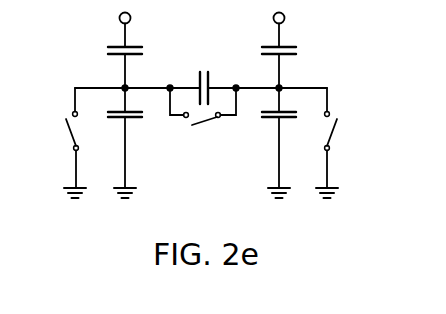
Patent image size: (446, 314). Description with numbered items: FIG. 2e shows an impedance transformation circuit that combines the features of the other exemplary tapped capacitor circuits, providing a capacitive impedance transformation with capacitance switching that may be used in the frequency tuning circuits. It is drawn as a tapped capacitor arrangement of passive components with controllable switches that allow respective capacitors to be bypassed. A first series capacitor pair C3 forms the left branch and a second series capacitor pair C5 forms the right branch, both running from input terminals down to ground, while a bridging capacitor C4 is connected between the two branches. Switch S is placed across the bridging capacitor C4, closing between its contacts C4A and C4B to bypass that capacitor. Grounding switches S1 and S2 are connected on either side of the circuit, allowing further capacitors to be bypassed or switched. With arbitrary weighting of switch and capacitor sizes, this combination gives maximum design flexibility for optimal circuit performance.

The capacitor C3 (series capacitor pair on left branch) C3 is at (104, 106).
The capacitor C4 (bridging capacitor) C4 is at (202, 74).
The capacitor C5 (series capacitor pair on right branch) C5 is at (299, 106).
The switch contact C4A (left terminal of bypass switch) C4A is at (164, 121).
The switch contact C4B (right terminal of bypass switch) C4B is at (242, 121).
The switch S (bypass switch across C4) S is at (203, 122).
The switch S1 (left grounding switch) S1 is at (51, 143).
The switch S2 (right grounding switch) S2 is at (351, 143).